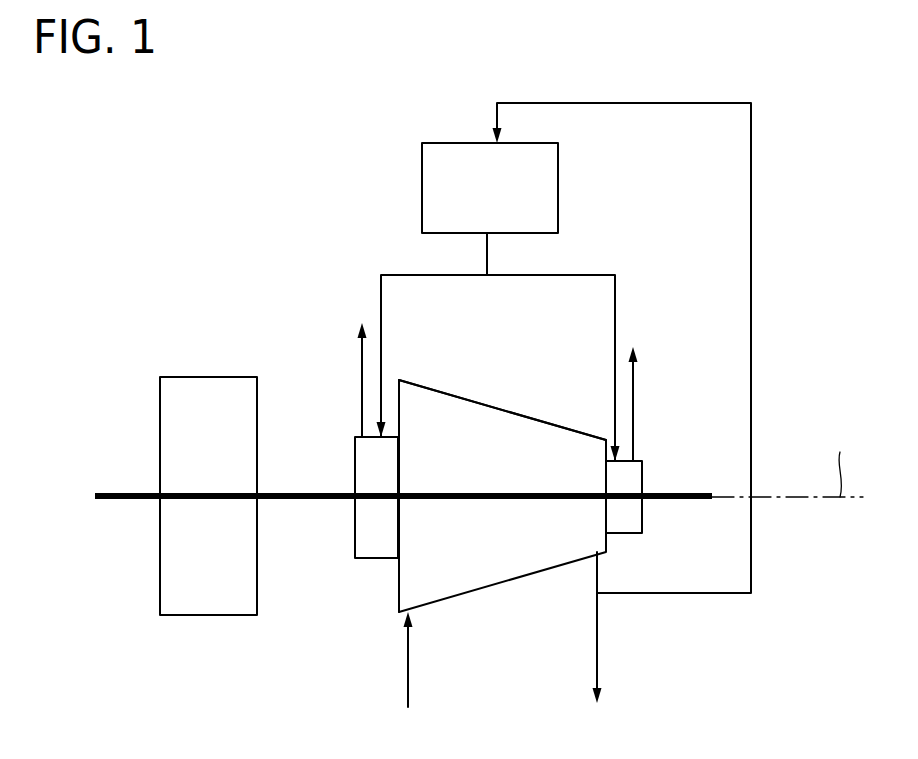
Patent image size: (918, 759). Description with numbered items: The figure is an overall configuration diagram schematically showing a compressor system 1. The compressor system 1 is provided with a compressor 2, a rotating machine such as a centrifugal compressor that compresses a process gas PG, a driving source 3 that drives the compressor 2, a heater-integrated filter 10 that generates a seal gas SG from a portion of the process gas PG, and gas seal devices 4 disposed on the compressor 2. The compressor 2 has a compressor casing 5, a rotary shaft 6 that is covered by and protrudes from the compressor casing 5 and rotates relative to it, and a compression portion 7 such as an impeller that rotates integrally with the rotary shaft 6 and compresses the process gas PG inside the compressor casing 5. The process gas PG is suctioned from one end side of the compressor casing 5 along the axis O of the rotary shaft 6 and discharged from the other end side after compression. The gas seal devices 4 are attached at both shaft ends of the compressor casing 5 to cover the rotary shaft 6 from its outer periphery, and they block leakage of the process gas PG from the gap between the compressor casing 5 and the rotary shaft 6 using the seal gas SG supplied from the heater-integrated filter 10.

The compressor system 1 is at (252, 276).
The compressor 2 is at (565, 414).
The driving source 3 is at (218, 377).
The gas seal device 4 is at (368, 558).
The compressor casing 5 is at (426, 387).
The rotary shaft 6 is at (482, 492).
The compression portion 7 is at (451, 461).
The heater-integrated filter 10 is at (447, 143).